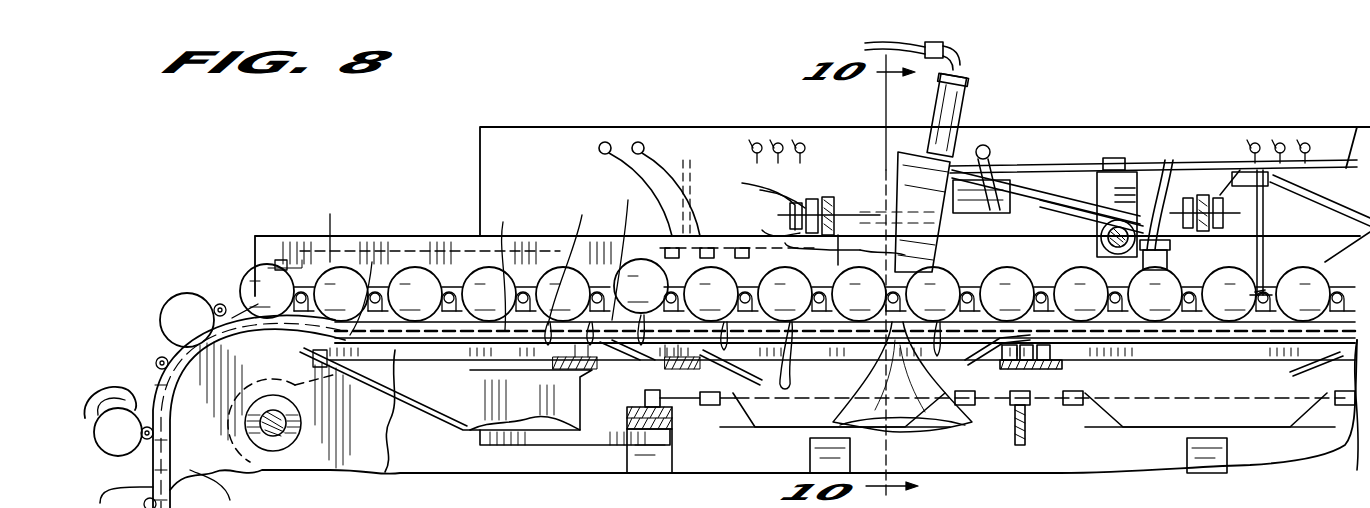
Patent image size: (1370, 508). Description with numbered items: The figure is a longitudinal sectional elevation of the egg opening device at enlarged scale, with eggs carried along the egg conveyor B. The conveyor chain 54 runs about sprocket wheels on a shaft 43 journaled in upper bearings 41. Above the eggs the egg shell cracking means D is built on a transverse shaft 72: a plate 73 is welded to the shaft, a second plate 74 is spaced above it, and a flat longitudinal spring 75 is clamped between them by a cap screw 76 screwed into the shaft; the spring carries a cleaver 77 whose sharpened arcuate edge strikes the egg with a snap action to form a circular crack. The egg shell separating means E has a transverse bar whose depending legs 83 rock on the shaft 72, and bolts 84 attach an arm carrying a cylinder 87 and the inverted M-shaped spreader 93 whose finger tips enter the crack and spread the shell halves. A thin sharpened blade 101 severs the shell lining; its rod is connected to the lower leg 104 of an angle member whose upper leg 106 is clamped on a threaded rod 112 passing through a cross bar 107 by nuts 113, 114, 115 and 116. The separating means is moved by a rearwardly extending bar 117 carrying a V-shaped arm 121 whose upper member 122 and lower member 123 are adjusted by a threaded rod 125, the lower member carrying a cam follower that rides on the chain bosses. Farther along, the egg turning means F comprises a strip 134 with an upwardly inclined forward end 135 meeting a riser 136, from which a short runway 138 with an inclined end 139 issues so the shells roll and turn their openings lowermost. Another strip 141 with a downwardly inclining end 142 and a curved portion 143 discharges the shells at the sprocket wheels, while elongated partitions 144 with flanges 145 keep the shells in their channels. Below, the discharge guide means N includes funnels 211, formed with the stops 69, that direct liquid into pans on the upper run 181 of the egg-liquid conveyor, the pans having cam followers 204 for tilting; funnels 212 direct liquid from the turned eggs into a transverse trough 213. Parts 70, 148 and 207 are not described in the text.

The upper bearings 41 is at (292, 367).
The shaft 43 is at (283, 451).
The chain 54 is at (243, 305).
The stops 69 is at (1258, 350).
The bracket 70 is at (978, 362).
The transverse shaft 72 is at (1180, 195).
The plate 73 is at (1120, 238).
The second plate 74 is at (1078, 178).
The flat longitudinal spring 75 is at (1030, 175).
The cap screw 76 is at (1118, 200).
The cleaver 77 is at (1005, 217).
The depending legs 83 is at (1100, 250).
The bolts 84 is at (1115, 158).
The cylinder 87 is at (960, 100).
The inverted M-shaped spreader 93 is at (915, 165).
The thin sharpened blade 101 is at (875, 239).
The lower leg 104 is at (792, 335).
The upper leg 106 is at (760, 180).
The cross bar 107 is at (822, 210).
The threaded rod 112 is at (870, 222).
The nut 113 is at (842, 200).
The nut 114 is at (790, 205).
The nut 115 is at (810, 250).
The nut 116 is at (780, 200).
The rearwardly extending bar 117 is at (1335, 165).
The V-shaped arm 121 is at (1365, 228).
The upper member 122 is at (1325, 210).
The lower member 123 is at (1330, 260).
The threaded rod 125 is at (1245, 213).
The strip 134 is at (571, 261).
The forward end 135 is at (755, 348).
The riser 136 is at (655, 372).
The runway 138 is at (627, 250).
The inclined end 139 is at (501, 267).
The strip of metal 141 is at (326, 230).
The forward end 142 is at (368, 293).
The curved portion 143 is at (200, 305).
The elongated partitions 144 is at (447, 236).
The flanges 145 is at (765, 235).
The block 148 is at (605, 352).
The upper run 181 is at (630, 435).
The cam followers 204 is at (930, 430).
The base 207 is at (737, 445).
The funnels 211 is at (775, 370).
The funnels 212 is at (405, 370).
The trough 213 is at (462, 432).
The egg conveyor B is at (140, 386).
The egg shell cracking means D is at (990, 235).
The egg shell separating means E is at (898, 170).
The egg turning means F is at (630, 225).
The discharge guide means N is at (945, 365).